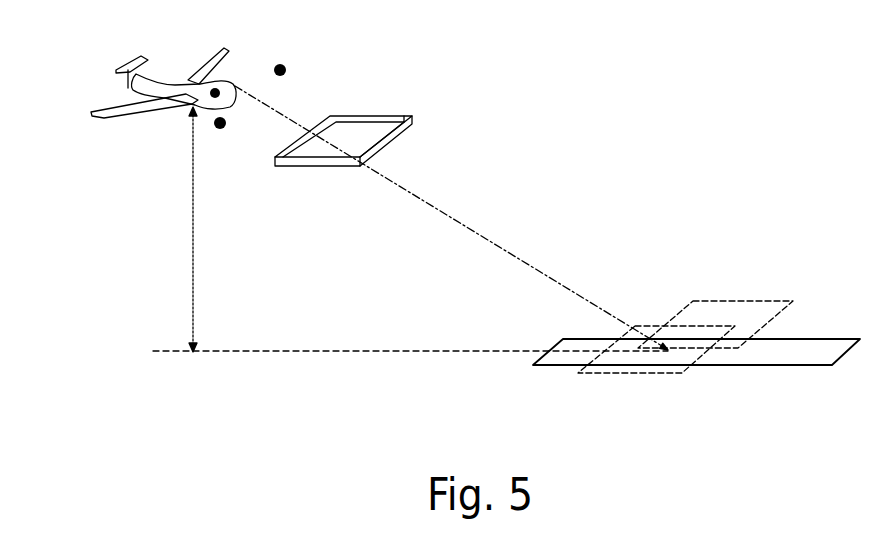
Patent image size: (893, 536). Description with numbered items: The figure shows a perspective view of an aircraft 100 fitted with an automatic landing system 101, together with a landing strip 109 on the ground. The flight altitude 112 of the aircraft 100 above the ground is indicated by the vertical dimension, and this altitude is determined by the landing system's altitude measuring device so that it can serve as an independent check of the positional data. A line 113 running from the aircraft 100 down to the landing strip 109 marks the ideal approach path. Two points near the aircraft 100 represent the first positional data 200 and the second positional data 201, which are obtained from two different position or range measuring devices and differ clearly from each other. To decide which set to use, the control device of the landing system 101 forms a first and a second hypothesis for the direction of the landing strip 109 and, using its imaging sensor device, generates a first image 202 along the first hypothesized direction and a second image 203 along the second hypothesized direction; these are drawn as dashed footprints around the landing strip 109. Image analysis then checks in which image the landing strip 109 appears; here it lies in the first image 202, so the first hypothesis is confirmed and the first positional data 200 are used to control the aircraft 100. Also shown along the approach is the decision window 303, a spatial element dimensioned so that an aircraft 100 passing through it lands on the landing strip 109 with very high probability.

The aircraft 100 is at (140, 84).
The automatic landing system 101 is at (217, 90).
The first positional data 200 is at (220, 129).
The second positional data 201 is at (286, 70).
The flight altitude 112 is at (192, 232).
The line 113 is at (481, 240).
The decision window 303 is at (393, 139).
The second image 203 is at (757, 312).
The first image 202 is at (643, 368).
The landing strip 109 is at (792, 354).